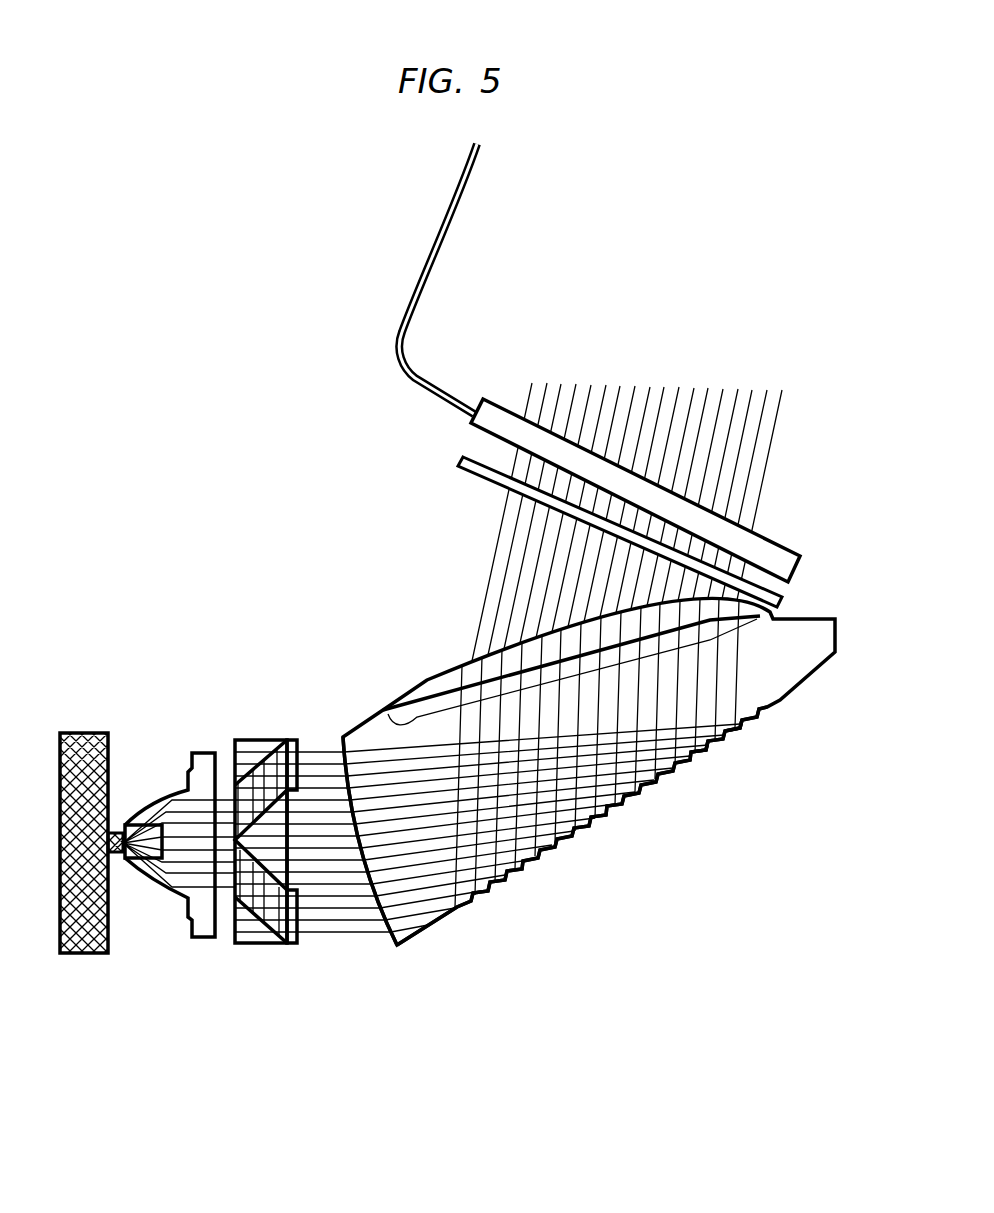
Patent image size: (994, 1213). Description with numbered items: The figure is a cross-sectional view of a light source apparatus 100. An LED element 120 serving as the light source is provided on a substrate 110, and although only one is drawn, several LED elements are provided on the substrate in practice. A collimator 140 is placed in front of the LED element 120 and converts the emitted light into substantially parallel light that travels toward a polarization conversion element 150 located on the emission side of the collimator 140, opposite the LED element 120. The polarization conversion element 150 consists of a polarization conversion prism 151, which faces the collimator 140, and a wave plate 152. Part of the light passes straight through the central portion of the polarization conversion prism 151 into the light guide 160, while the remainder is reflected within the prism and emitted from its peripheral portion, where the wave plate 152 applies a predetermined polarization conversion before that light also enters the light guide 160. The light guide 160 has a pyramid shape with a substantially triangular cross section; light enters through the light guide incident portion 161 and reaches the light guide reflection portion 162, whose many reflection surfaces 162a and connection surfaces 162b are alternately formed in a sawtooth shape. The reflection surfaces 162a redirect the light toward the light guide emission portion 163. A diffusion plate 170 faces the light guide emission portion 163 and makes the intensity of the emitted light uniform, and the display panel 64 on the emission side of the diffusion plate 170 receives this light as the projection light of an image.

The light source apparatus 100 is at (180, 452).
The display panel 64 is at (492, 400).
The diffusion plate 170 is at (463, 460).
The light guide 160 is at (577, 799).
The light guide emission portion 163 is at (430, 692).
The light guide incident portion 161 is at (388, 948).
The light guide reflection portion 162 is at (814, 757).
The reflection surface 162a is at (720, 740).
The connection surface 162b is at (706, 750).
The substrate 110 is at (75, 733).
The LED element 120 is at (115, 832).
The collimator 140 is at (170, 942).
The polarization conversion element 150 is at (264, 862).
The polarization conversion prism 151 is at (258, 738).
The wave plate 152 is at (290, 738).